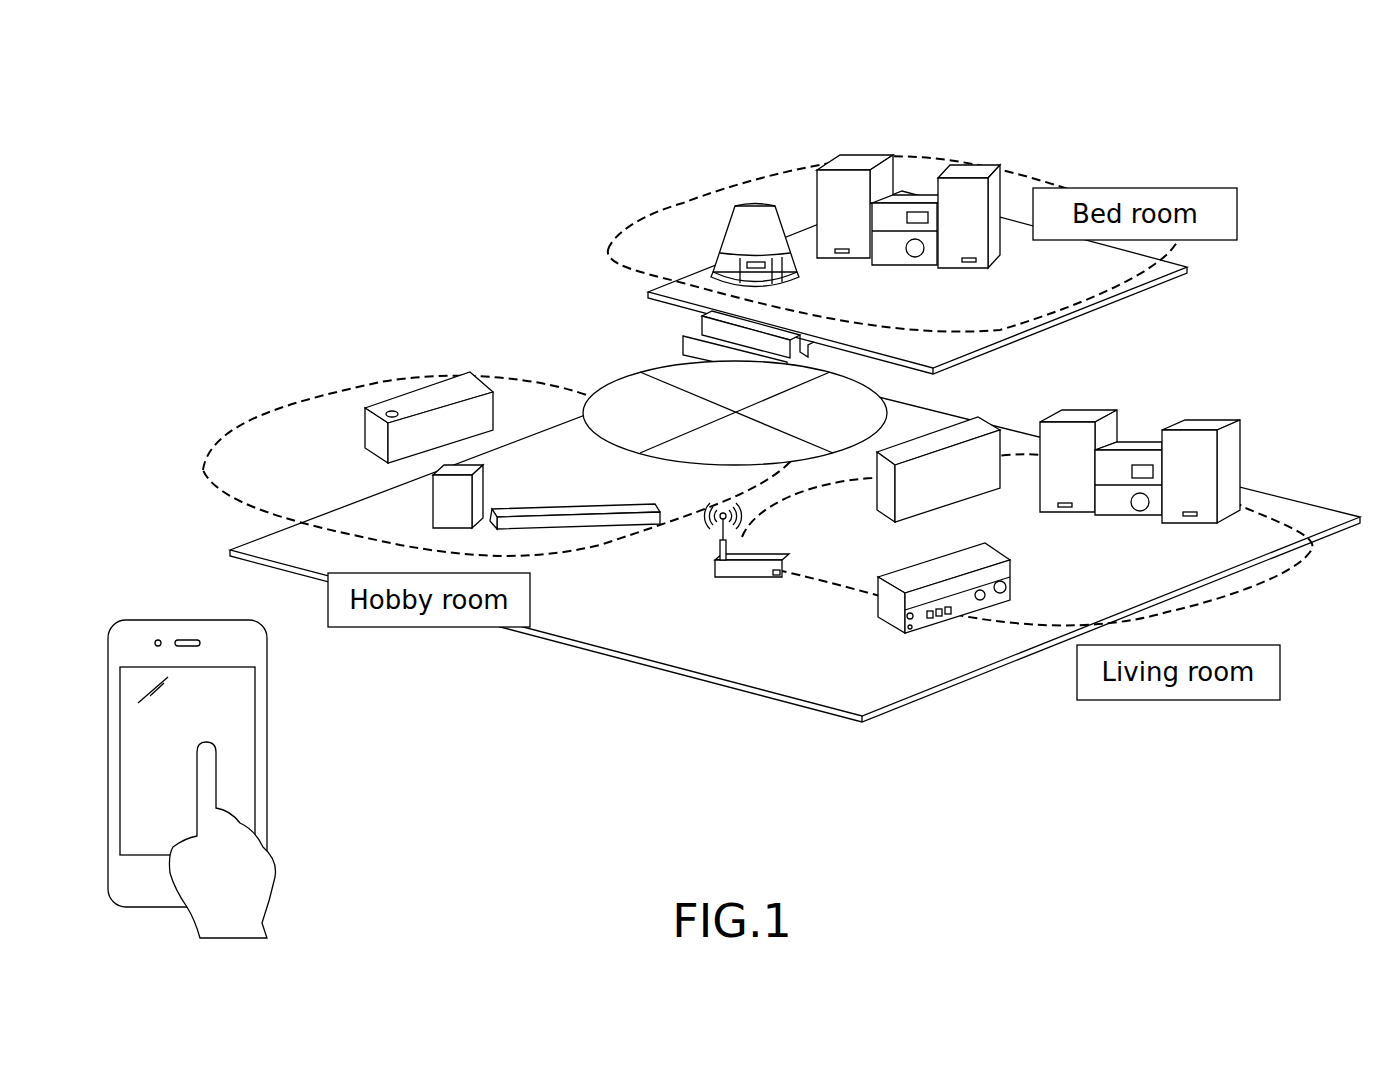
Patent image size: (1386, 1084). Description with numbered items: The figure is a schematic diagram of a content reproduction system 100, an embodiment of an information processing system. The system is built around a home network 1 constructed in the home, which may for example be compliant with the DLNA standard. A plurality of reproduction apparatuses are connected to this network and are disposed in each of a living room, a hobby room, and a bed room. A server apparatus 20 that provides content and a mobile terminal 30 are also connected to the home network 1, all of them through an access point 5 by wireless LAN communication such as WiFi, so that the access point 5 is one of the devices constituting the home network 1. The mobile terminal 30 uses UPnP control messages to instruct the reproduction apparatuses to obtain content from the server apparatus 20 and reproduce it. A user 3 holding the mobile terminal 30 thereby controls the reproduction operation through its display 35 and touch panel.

The content reproduction system 100 is at (670, 133).
The home network 1 is at (624, 376).
The server apparatus 20 is at (968, 420).
The access point 5 is at (715, 567).
The mobile terminal 30 is at (248, 729).
The display 35 is at (243, 750).
The user 3 is at (257, 892).